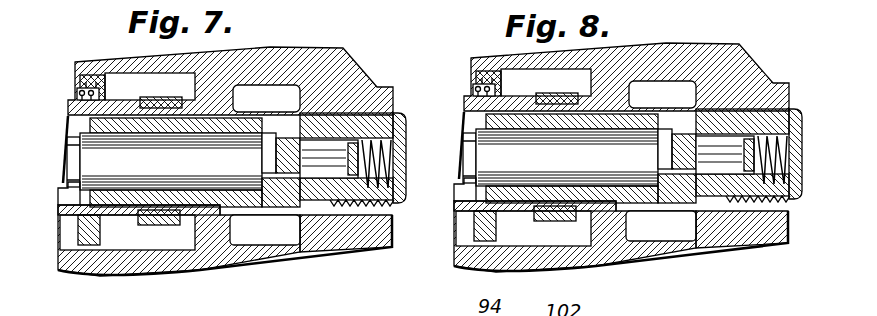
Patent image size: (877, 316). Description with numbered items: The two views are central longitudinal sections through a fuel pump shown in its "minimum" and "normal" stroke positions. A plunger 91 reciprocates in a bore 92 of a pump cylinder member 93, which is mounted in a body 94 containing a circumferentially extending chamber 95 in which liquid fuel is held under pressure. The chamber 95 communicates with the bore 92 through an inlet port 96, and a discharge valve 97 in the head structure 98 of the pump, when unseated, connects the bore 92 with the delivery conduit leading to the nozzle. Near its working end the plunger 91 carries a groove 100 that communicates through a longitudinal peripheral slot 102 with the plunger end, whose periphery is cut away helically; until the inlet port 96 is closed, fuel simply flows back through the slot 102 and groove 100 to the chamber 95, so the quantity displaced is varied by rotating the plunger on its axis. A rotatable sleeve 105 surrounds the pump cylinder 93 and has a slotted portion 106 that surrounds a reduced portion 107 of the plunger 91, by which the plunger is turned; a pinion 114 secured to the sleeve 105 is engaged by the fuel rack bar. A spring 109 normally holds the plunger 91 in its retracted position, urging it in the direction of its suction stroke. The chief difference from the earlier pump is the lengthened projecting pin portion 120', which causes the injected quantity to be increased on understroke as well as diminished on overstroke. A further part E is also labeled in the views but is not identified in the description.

In FIG. 7, the plunger 91 is at (240, 178).
In FIG. 8, the plunger 91 is at (567, 214).
In FIG. 7, the bore 92 is at (193, 186).
In FIG. 8, the bore 92 is at (572, 241).
In FIG. 7, the pump cylinder member 93 is at (241, 132).
In FIG. 8, the pump cylinder member 93 is at (655, 126).
In FIG. 7, the body 94 is at (343, 60).
In FIG. 8, the body 94 is at (626, 65).
In FIG. 7, the circumferentially extending chamber 95 is at (283, 237).
In FIG. 8, the circumferentially extending chamber 95 is at (581, 247).
In FIG. 7, the inlet port 96 is at (300, 212).
In FIG. 8, the inlet port 96 is at (737, 244).
In FIG. 7, the discharge valve 97 is at (383, 135).
In FIG. 8, the discharge valve 97 is at (789, 184).
In FIG. 7, the head structure 98 is at (395, 198).
In FIG. 8, the head structure 98 is at (800, 130).
In FIG. 7, the groove 100 is at (278, 157).
In FIG. 8, the groove 100 is at (681, 127).
In FIG. 7, the longitudinal peripheral slot 102 is at (303, 160).
In FIG. 8, the longitudinal peripheral slot 102 is at (718, 97).
In FIG. 7, the rotatable sleeve 105 is at (125, 212).
In FIG. 8, the rotatable sleeve 105 is at (535, 249).
In FIG. 7, the sleeve portion 106 is at (77, 66).
In FIG. 8, the sleeve portion 106 is at (476, 88).
In FIG. 7, the reduced portion 107 is at (67, 112).
In FIG. 8, the reduced portion 107 is at (451, 143).
In FIG. 7, the spring 109 is at (63, 250).
In FIG. 8, the spring 109 is at (449, 226).
In FIG. 7, the pinion 114 is at (160, 222).
In FIG. 8, the pinion 114 is at (544, 250).
In FIG. 7, the projecting pin portion 120' is at (358, 97).
In FIG. 8, the projecting pin portion 120' is at (754, 95).
In FIG. 7, the end member E is at (272, 182).
In FIG. 8, the end member E is at (668, 235).